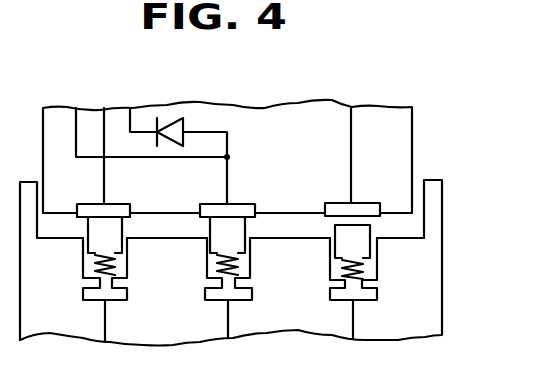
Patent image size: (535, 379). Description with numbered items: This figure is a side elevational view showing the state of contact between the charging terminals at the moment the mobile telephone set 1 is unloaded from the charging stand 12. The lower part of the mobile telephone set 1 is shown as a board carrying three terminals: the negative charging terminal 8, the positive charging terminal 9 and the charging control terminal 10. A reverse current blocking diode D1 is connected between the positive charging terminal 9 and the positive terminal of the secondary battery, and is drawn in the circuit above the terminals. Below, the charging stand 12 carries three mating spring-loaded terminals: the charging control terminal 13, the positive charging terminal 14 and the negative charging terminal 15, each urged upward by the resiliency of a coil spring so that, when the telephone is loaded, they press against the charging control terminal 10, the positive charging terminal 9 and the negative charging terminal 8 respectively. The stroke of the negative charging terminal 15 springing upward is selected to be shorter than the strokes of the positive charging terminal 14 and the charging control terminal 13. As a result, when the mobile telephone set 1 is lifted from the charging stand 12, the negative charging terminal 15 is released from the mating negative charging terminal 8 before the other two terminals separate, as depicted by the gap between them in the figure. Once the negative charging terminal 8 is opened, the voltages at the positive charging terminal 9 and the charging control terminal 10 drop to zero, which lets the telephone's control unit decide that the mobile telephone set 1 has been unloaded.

The mobile telephone set 1 is at (412, 122).
The reverse current blocking diode D1 is at (185, 126).
The negative charging terminal 8 is at (368, 203).
The positive charging terminal 9 is at (250, 204).
The charging control terminal 10 is at (128, 204).
The charging stand 12 is at (442, 190).
The charging control terminal 13 is at (82, 244).
The positive charging terminal 14 is at (207, 244).
The negative charging terminal 15 is at (330, 245).